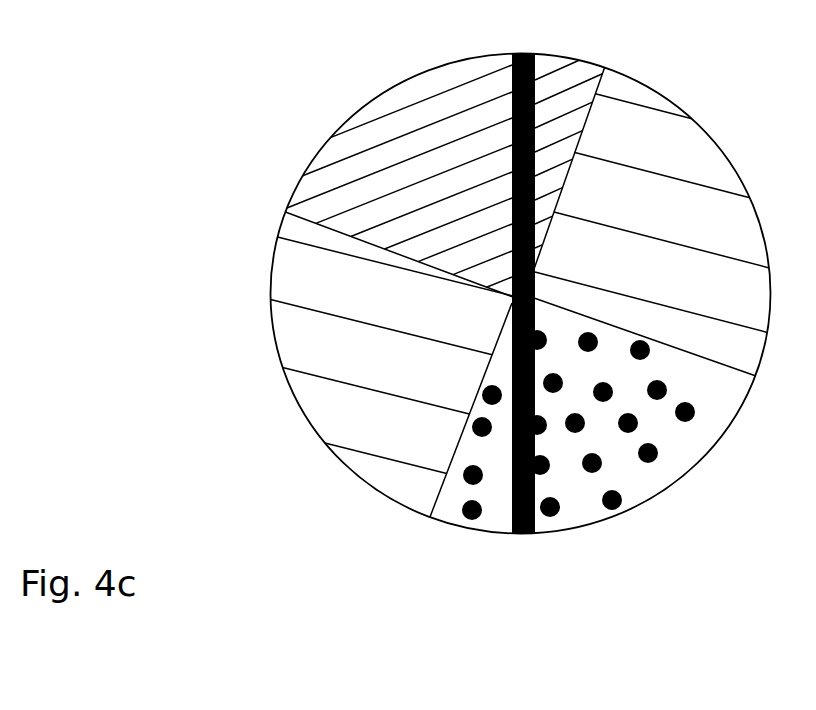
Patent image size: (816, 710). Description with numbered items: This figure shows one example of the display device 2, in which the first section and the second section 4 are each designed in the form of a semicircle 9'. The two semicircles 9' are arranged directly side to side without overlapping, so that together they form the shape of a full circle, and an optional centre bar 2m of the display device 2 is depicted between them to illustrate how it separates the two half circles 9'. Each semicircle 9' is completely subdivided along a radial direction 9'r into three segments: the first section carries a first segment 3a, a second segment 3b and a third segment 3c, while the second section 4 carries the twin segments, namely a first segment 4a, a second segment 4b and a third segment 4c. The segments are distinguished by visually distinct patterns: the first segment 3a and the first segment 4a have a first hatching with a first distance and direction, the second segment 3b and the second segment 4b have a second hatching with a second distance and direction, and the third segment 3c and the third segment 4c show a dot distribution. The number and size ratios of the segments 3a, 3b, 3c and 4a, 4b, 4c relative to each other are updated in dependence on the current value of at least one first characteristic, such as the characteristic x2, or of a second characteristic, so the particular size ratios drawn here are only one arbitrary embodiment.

The display device 2 is at (568, 556).
The centre bar 2m is at (515, 535).
The first segment of the first section 3a is at (370, 118).
The second segment of the first section 3b is at (320, 405).
The third segment of the first section 3c is at (446, 510).
The second section 4 is at (672, 90).
The first segment of the second section 4a is at (574, 78).
The second segment of the second section 4b is at (718, 162).
The third segment of the second section 4c is at (668, 466).
The semicircle 9' is at (474, 98).
The radial direction 9'r is at (496, 447).
The first characteristic x2 is at (440, 607).